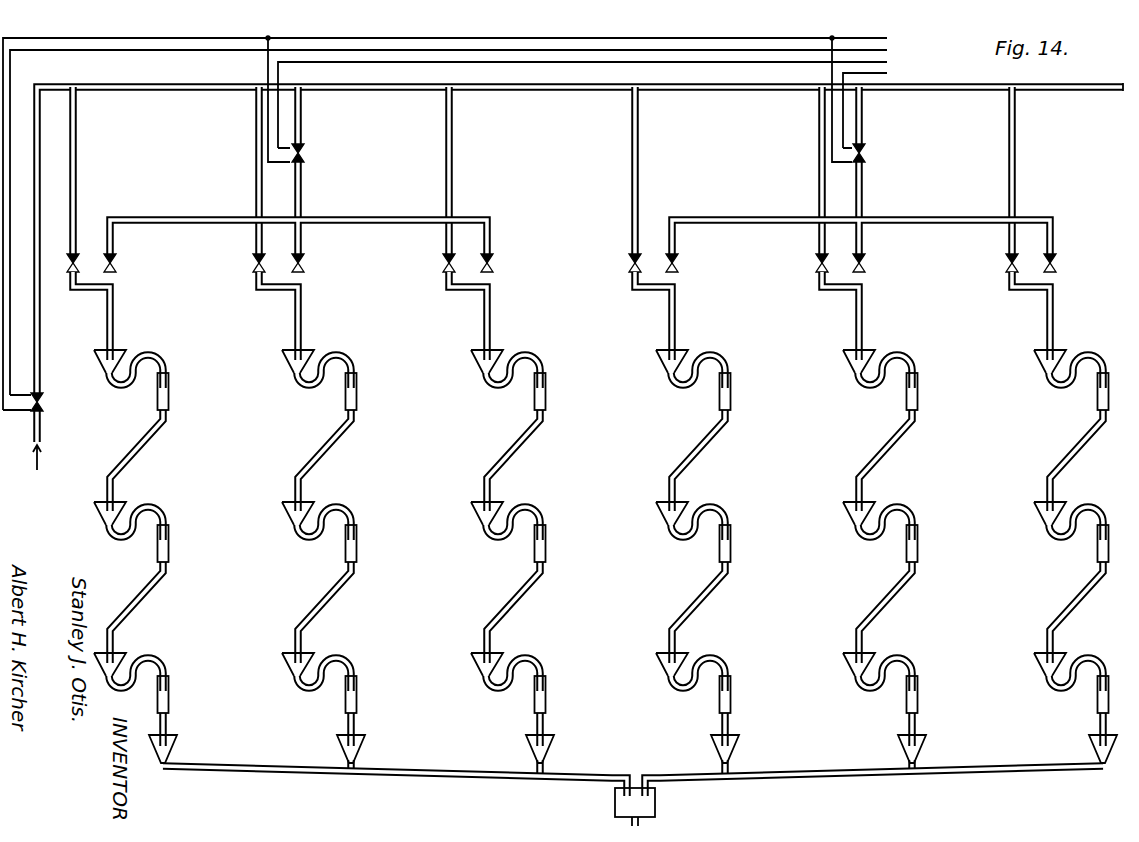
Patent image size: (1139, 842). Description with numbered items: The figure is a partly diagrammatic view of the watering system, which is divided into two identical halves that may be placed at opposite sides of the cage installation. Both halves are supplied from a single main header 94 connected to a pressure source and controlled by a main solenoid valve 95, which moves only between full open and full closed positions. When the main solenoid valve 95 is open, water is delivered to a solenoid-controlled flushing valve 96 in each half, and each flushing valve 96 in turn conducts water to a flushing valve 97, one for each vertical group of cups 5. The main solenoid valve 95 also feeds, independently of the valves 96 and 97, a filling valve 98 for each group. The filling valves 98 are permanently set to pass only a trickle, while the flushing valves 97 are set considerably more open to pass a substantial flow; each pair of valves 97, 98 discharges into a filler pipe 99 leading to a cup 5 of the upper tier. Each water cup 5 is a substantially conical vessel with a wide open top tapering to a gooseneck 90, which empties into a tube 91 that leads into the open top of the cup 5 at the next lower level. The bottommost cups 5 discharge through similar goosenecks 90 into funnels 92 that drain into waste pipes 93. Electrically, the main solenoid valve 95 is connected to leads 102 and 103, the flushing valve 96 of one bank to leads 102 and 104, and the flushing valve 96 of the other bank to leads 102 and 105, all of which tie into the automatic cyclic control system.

The water cup 5 is at (124, 352).
The gooseneck 90 is at (156, 353).
The tube 91 is at (169, 416).
The funnel 92 is at (175, 741).
The waste pipe 93 is at (440, 771).
The main header 94 is at (1047, 90).
The main solenoid valve 95 is at (44, 405).
The solenoid-controlled flushing valve 96 is at (305, 152).
The flushing valve 97 is at (117, 265).
The filling valve 98 is at (67, 263).
The filler pipe 99 is at (118, 317).
The electrical lead 102 is at (887, 38).
The electrical lead 103 is at (887, 50).
The electrical lead 104 is at (887, 62).
The electrical lead 105 is at (887, 73).